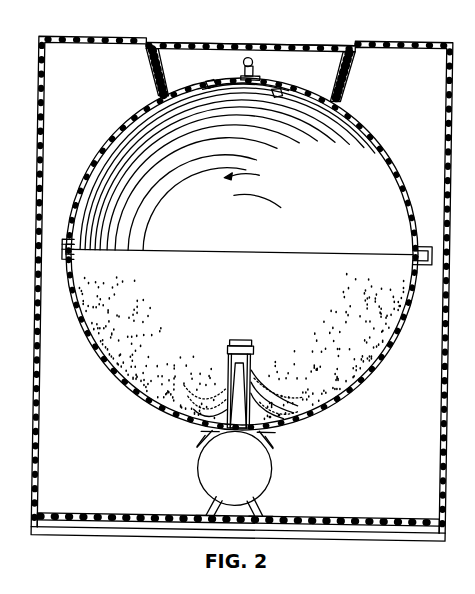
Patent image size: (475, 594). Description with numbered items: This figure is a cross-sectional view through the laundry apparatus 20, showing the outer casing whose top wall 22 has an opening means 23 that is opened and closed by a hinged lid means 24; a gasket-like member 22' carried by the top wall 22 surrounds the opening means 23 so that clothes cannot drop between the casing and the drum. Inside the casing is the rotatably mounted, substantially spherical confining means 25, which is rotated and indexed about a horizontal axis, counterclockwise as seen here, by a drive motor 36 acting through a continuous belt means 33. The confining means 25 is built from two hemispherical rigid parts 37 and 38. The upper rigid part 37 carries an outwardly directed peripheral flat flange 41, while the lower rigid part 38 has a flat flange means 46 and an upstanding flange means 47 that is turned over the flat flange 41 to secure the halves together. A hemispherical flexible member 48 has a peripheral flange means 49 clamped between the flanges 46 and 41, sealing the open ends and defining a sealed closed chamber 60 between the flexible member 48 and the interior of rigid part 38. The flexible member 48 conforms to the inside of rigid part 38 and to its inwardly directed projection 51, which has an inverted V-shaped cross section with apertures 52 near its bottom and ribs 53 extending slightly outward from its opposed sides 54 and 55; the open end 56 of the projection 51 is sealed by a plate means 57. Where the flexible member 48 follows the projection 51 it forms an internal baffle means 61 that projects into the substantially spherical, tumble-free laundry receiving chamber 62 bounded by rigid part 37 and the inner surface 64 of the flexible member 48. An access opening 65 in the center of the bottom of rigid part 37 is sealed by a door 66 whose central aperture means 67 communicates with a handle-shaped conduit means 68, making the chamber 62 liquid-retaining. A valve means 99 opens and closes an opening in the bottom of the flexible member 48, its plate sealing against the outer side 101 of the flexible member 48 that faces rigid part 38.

The laundry apparatus 20 is at (76, 30).
The top wall 22 is at (242, 276).
The gasket-like member 22' is at (229, 75).
The opening means 23 is at (200, 44).
The lid means 24 is at (277, 42).
The spherical confining means 25 is at (108, 140).
The continuous belt means 33 is at (272, 443).
The drive motor 36 is at (254, 483).
The hemispherical rigid part 37 is at (393, 165).
The hemispherical rigid part 38 is at (350, 388).
The peripheral flat flange 41 is at (62, 237).
The flat flange means 46 is at (58, 262).
The upstanding flange means 47 is at (55, 243).
The flexible member 48 is at (383, 307).
The peripheral flange means 49 is at (55, 253).
The projection 51 is at (254, 368).
The apertures 52 is at (267, 397).
The ribs 53 is at (277, 407).
The side of projection 54 is at (228, 374).
The side of projection 55 is at (258, 383).
The open end of projection 56 is at (238, 420).
The plate means 57 is at (277, 428).
The sealed closed chamber 60 is at (212, 441).
The internal baffle means 61 is at (255, 348).
The laundry receiving chamber 62 is at (360, 163).
The inner surface of flexible member 64 is at (104, 345).
The access opening 65 is at (274, 92).
The door 66 is at (209, 83).
The central aperture means 67 is at (250, 82).
The conduit means 68 is at (246, 57).
The valve means 99 is at (240, 341).
The outer side of flexible member 101 is at (202, 430).